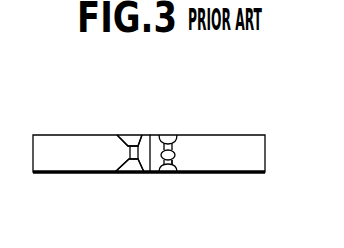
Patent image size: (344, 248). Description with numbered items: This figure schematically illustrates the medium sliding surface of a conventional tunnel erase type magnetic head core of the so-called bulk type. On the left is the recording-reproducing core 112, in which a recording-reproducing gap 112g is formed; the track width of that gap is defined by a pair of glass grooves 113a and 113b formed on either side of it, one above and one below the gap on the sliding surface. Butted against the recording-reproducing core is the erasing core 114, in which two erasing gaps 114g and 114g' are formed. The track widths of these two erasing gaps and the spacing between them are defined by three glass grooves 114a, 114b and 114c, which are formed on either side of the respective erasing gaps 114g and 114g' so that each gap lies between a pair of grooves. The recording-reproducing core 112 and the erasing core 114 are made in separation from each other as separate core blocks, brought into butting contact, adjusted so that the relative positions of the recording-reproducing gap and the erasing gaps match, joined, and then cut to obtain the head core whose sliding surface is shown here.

The recording-reproducing core 112 is at (47, 141).
The recording-reproducing gap 112g is at (128, 150).
The glass groove 113a is at (134, 137).
The glass groove 113b is at (124, 172).
The erasing core 114 is at (258, 162).
The glass groove 114a is at (173, 136).
The glass groove 114b is at (163, 137).
The glass groove 114c is at (165, 175).
The erasing gap 114g is at (211, 128).
The erasing gap 114g' is at (193, 185).